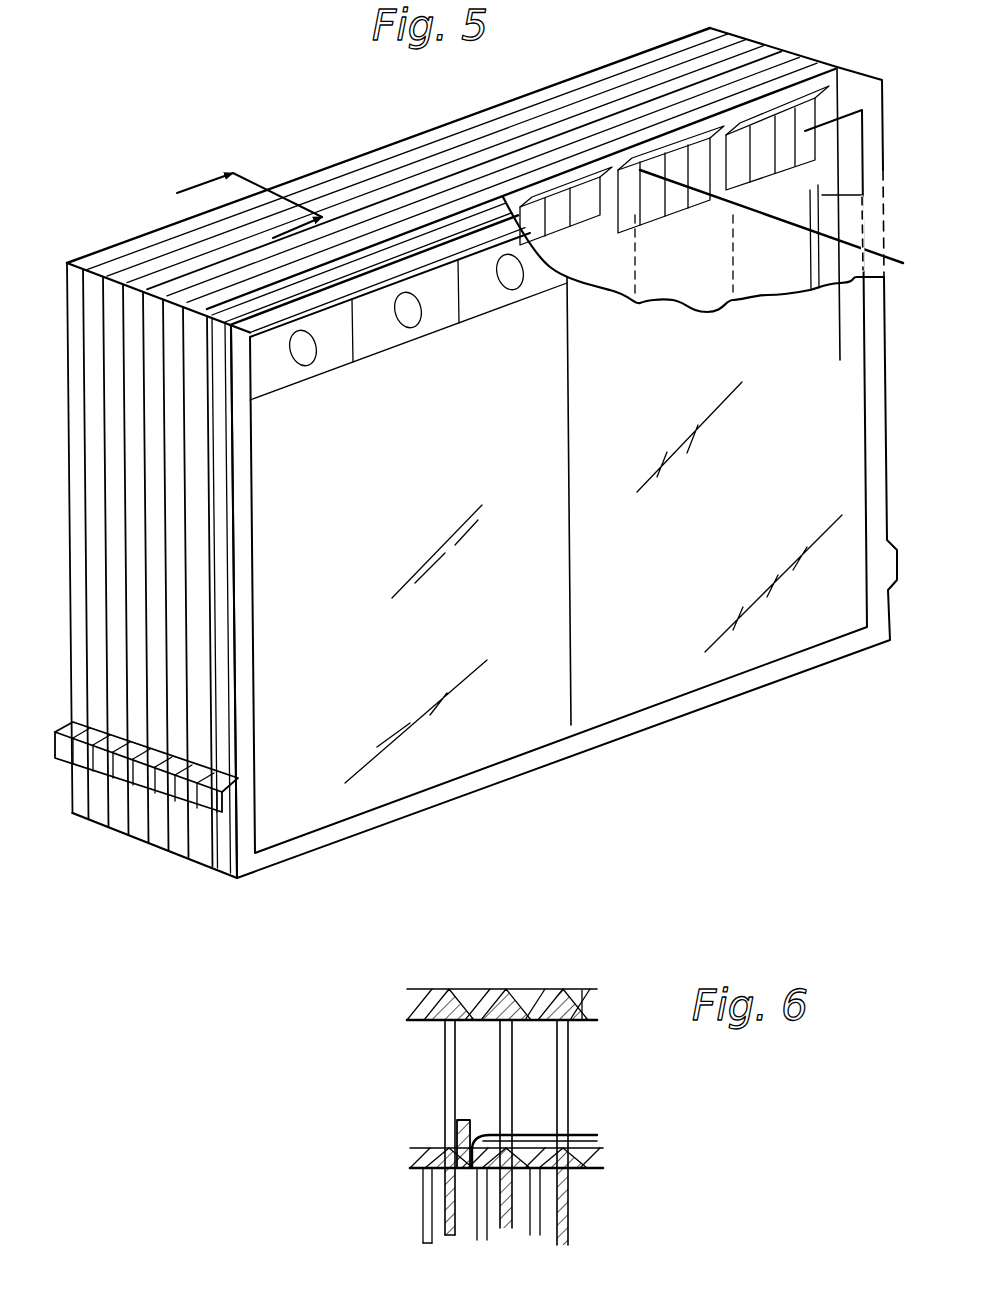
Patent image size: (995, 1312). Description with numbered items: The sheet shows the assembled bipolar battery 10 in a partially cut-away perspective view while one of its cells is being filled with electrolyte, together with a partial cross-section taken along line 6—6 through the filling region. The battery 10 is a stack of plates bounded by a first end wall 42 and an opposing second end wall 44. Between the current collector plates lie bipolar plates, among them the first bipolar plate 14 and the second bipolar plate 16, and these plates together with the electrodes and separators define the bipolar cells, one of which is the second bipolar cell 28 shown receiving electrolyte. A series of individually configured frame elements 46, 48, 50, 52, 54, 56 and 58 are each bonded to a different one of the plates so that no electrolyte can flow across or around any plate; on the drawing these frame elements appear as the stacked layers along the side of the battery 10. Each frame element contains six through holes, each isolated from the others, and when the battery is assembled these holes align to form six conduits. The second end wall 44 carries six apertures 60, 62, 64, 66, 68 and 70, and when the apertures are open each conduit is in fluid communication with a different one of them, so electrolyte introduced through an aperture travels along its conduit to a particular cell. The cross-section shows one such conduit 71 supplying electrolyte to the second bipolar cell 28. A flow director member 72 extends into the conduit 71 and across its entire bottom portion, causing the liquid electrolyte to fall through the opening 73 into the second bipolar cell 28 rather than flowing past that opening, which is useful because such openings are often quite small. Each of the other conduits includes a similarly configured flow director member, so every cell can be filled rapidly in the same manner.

In FIG. 5, the bipolar battery 10 is at (95, 226).
In FIG. 5, the line 6— 6 is at (271, 189).
In FIG. 6, the first bipolar plate 14 is at (447, 1202).
In FIG. 6, the second bipolar plate 16 is at (510, 1205).
In FIG. 6, the second bipolar cell 28 is at (467, 1222).
In FIG. 5, the first end wall 42 is at (80, 826).
In FIG. 5, the second end wall 44 is at (415, 760).
In FIG. 5, the frame element 46 is at (97, 830).
In FIG. 6, the frame element 46 is at (430, 989).
In FIG. 5, the frame element 48 is at (117, 838).
In FIG. 6, the frame element 48 is at (487, 988).
In FIG. 5, the frame element 50 is at (140, 842).
In FIG. 6, the frame element 50 is at (530, 988).
In FIG. 5, the frame element 52 is at (160, 852).
In FIG. 6, the frame element 52 is at (582, 990).
In FIG. 5, the frame element 54 is at (183, 690).
In FIG. 5, the frame element 56 is at (203, 633).
In FIG. 5, the frame element 58 is at (208, 868).
In FIG. 5, the aperture 60 is at (305, 360).
In FIG. 5, the aperture 62 is at (410, 322).
In FIG. 5, the aperture 64 is at (510, 285).
In FIG. 5, the aperture 66 is at (638, 296).
In FIG. 5, the aperture 68 is at (725, 302).
In FIG. 5, the aperture 70 is at (832, 238).
In FIG. 6, the conduit 71 is at (473, 1047).
In FIG. 6, the flow director member 72 is at (458, 1128).
In FIG. 6, the opening 73 is at (513, 1133).